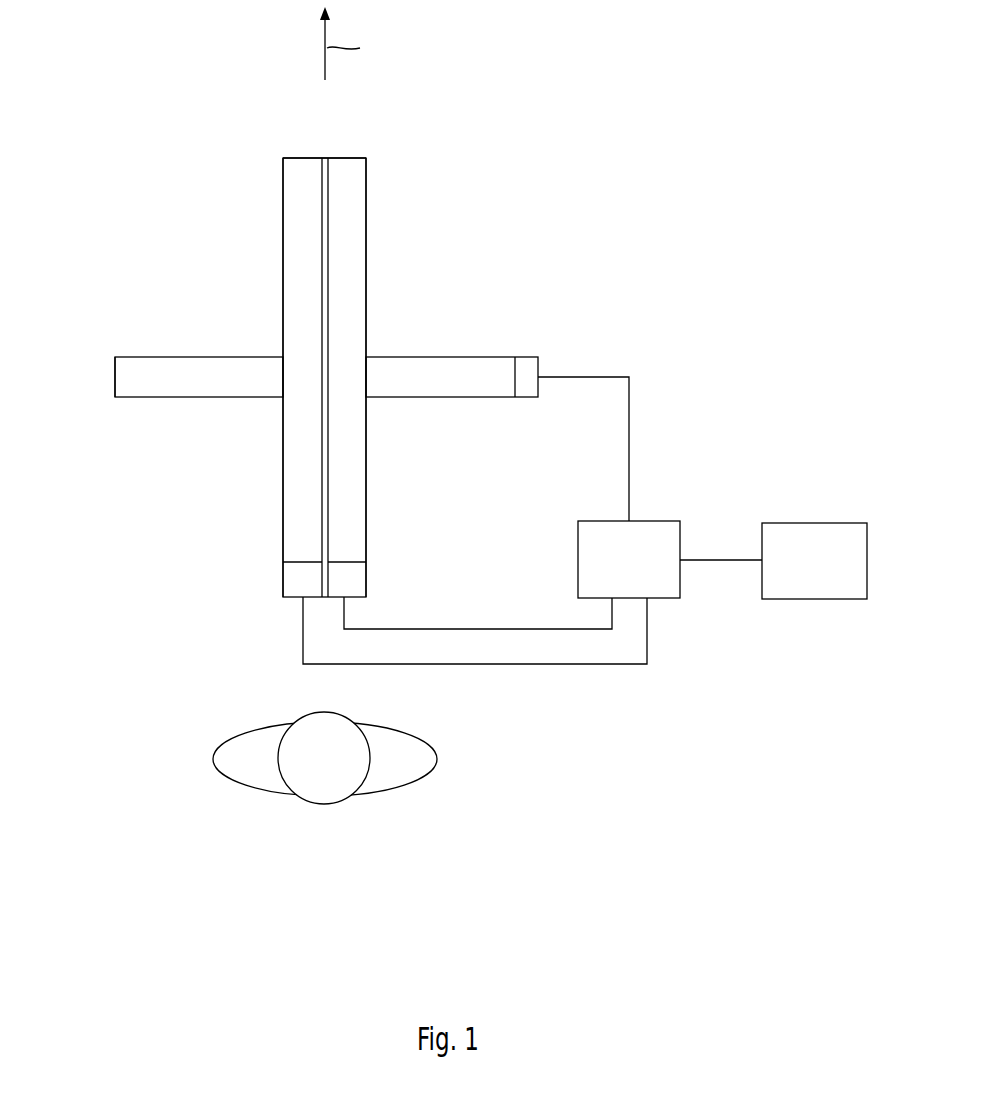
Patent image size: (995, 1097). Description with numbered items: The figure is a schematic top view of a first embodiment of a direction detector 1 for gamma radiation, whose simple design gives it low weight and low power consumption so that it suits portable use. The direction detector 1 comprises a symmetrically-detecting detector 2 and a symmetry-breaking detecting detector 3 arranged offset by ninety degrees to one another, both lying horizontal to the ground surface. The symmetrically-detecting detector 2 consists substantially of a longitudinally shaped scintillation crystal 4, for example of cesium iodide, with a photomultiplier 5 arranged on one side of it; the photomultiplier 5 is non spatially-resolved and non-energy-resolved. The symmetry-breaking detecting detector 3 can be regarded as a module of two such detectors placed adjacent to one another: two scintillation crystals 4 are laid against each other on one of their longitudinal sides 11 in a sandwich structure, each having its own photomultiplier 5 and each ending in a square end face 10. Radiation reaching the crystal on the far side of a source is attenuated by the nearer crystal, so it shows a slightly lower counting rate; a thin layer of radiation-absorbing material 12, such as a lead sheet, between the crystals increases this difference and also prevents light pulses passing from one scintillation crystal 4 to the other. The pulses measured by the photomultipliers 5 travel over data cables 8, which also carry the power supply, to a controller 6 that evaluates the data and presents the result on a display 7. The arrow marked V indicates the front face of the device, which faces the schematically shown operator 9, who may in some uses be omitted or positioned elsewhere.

The direction detector 1 is at (454, 436).
The symmetrically-detecting detector 2 is at (458, 350).
The symmetry-breaking detecting detector 3 is at (372, 203).
The scintillation crystal 4 is at (300, 245).
The photomultiplier 5 is at (527, 365).
The controller 6 is at (637, 572).
The display 7 is at (822, 573).
The data cable 8 is at (630, 448).
The operator 9 is at (330, 797).
The end face 10 is at (114, 375).
The longitudinal side 11 is at (220, 357).
The radiation-absorbing material 12 is at (328, 463).